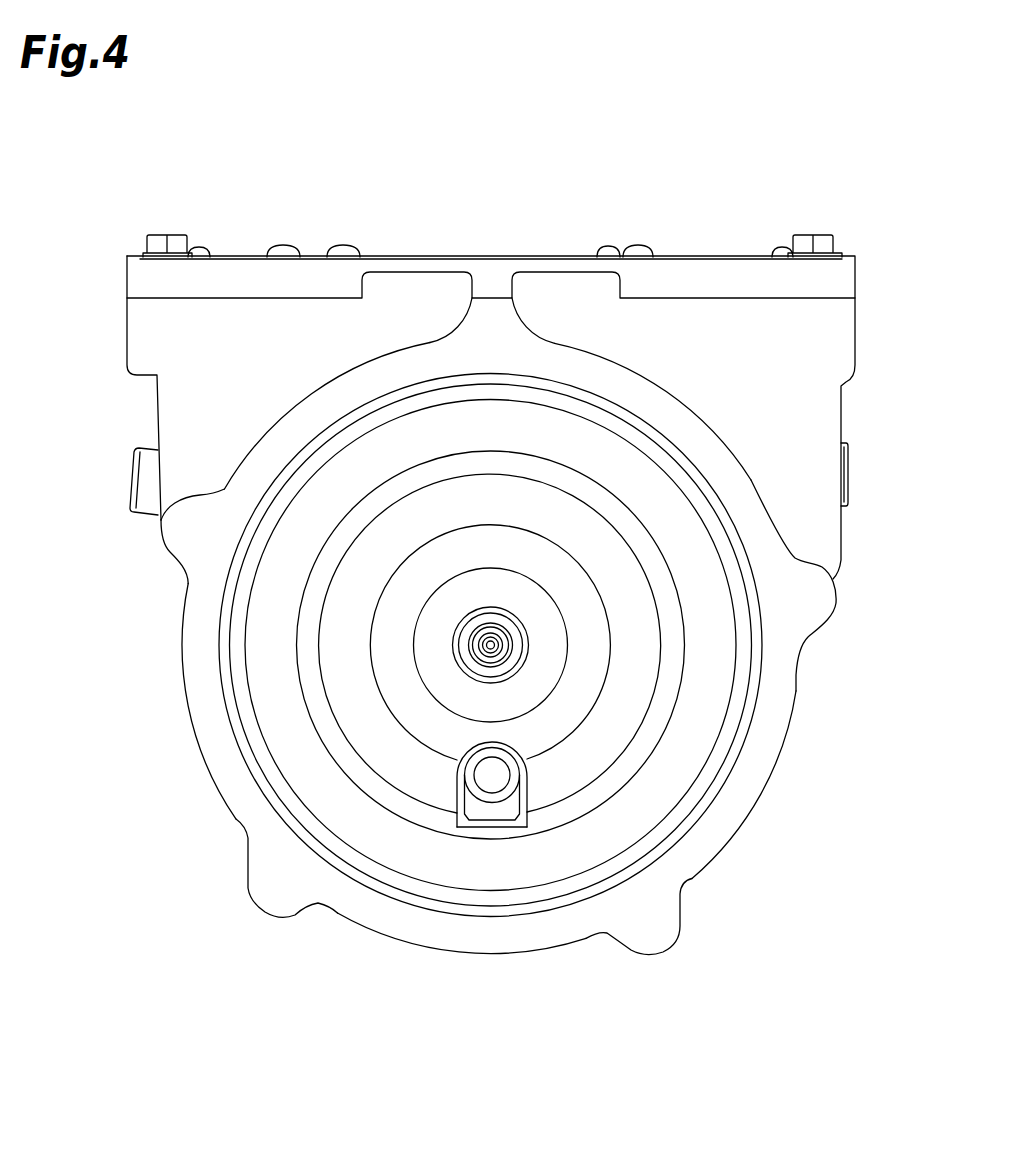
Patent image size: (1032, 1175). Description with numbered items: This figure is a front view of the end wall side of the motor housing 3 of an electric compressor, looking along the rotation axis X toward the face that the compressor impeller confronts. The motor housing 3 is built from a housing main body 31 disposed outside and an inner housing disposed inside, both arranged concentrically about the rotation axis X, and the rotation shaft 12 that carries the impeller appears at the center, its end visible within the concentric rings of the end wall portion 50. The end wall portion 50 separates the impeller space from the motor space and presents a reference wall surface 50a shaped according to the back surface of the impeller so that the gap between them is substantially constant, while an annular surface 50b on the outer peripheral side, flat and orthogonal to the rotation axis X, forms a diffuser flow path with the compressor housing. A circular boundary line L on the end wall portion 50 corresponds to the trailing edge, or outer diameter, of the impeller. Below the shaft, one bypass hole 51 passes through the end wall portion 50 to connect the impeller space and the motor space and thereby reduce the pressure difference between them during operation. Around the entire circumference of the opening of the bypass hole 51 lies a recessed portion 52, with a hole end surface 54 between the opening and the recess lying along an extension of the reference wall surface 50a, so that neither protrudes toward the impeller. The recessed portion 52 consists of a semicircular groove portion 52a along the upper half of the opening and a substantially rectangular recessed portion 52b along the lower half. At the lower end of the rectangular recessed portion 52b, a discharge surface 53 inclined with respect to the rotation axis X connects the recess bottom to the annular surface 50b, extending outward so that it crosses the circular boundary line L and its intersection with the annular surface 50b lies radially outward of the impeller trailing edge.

The motor housing 3 is at (517, 586).
The rotation shaft 12 is at (522, 647).
The housing main body 31 is at (842, 518).
The end wall portion 50 is at (770, 688).
The reference wall surface 50a is at (330, 597).
The annular surface 50b is at (523, 862).
The bypass hole 51 is at (477, 770).
The recessed portion 52 is at (475, 856).
The semicircular groove portion 52a is at (505, 753).
The substantially rectangular recessed portion 52b is at (510, 812).
The discharge surface 53 is at (500, 818).
The hole end surface 54 is at (483, 767).
The circular boundary line L is at (567, 493).
The rotation axis X is at (490, 632).